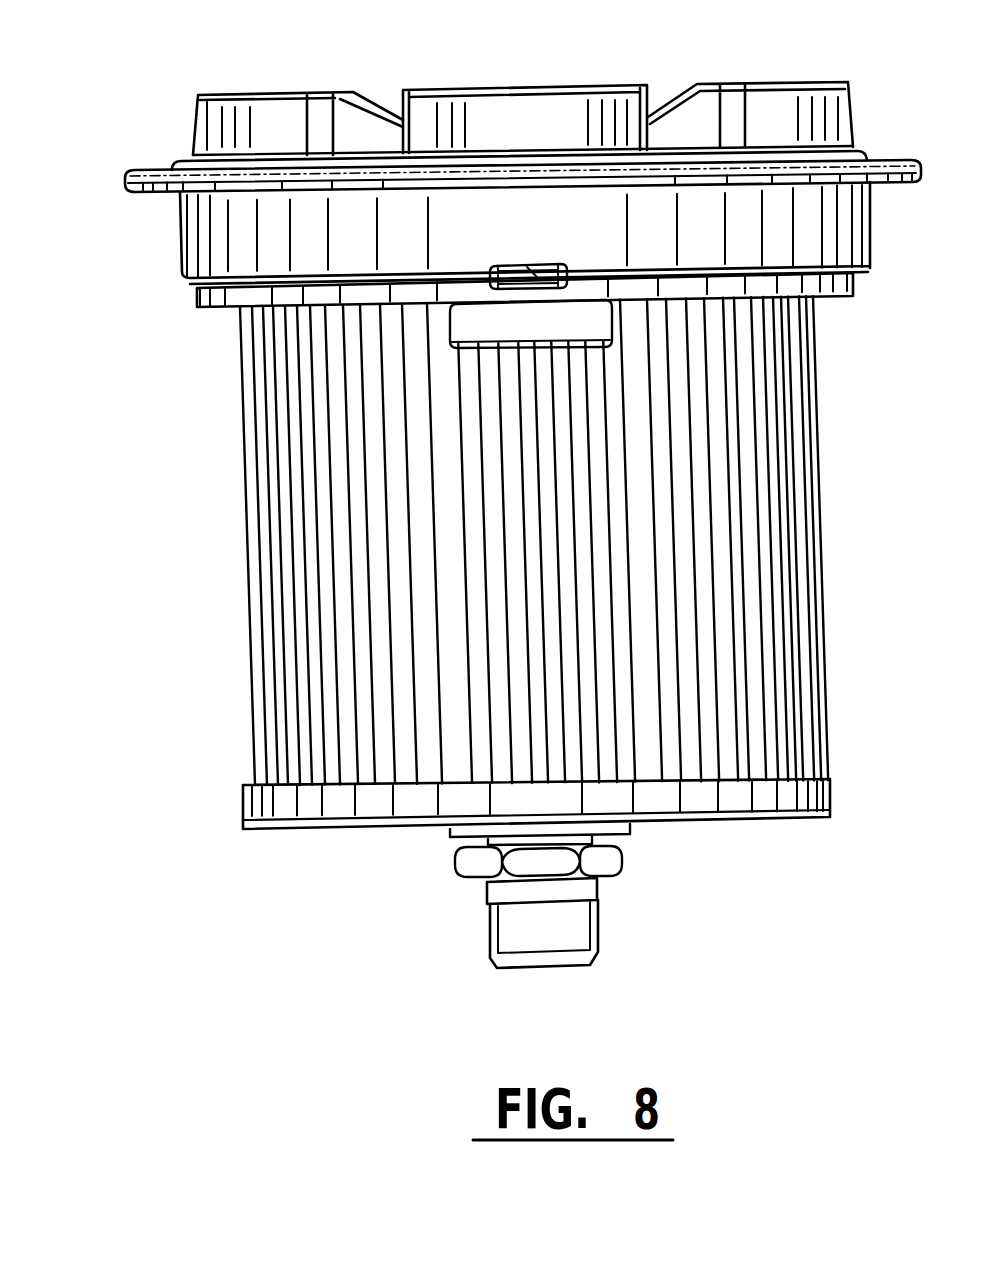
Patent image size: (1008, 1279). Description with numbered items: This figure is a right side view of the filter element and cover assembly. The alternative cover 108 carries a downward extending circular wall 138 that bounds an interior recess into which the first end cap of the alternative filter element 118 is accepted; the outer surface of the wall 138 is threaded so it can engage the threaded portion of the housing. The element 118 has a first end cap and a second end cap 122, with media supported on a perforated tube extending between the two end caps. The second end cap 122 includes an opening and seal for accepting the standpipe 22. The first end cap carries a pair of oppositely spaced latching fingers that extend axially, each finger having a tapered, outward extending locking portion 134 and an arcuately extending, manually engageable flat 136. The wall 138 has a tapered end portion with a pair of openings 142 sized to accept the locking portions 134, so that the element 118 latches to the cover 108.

The cover 108 is at (148, 170).
The circular wall 138 is at (208, 235).
The locking portion 134 is at (535, 276).
The opening 142 is at (566, 264).
The flat 136 is at (562, 337).
The second end cap 122 is at (745, 818).
The standpipe 22 is at (625, 863).
The filter element 118 is at (439, 945).